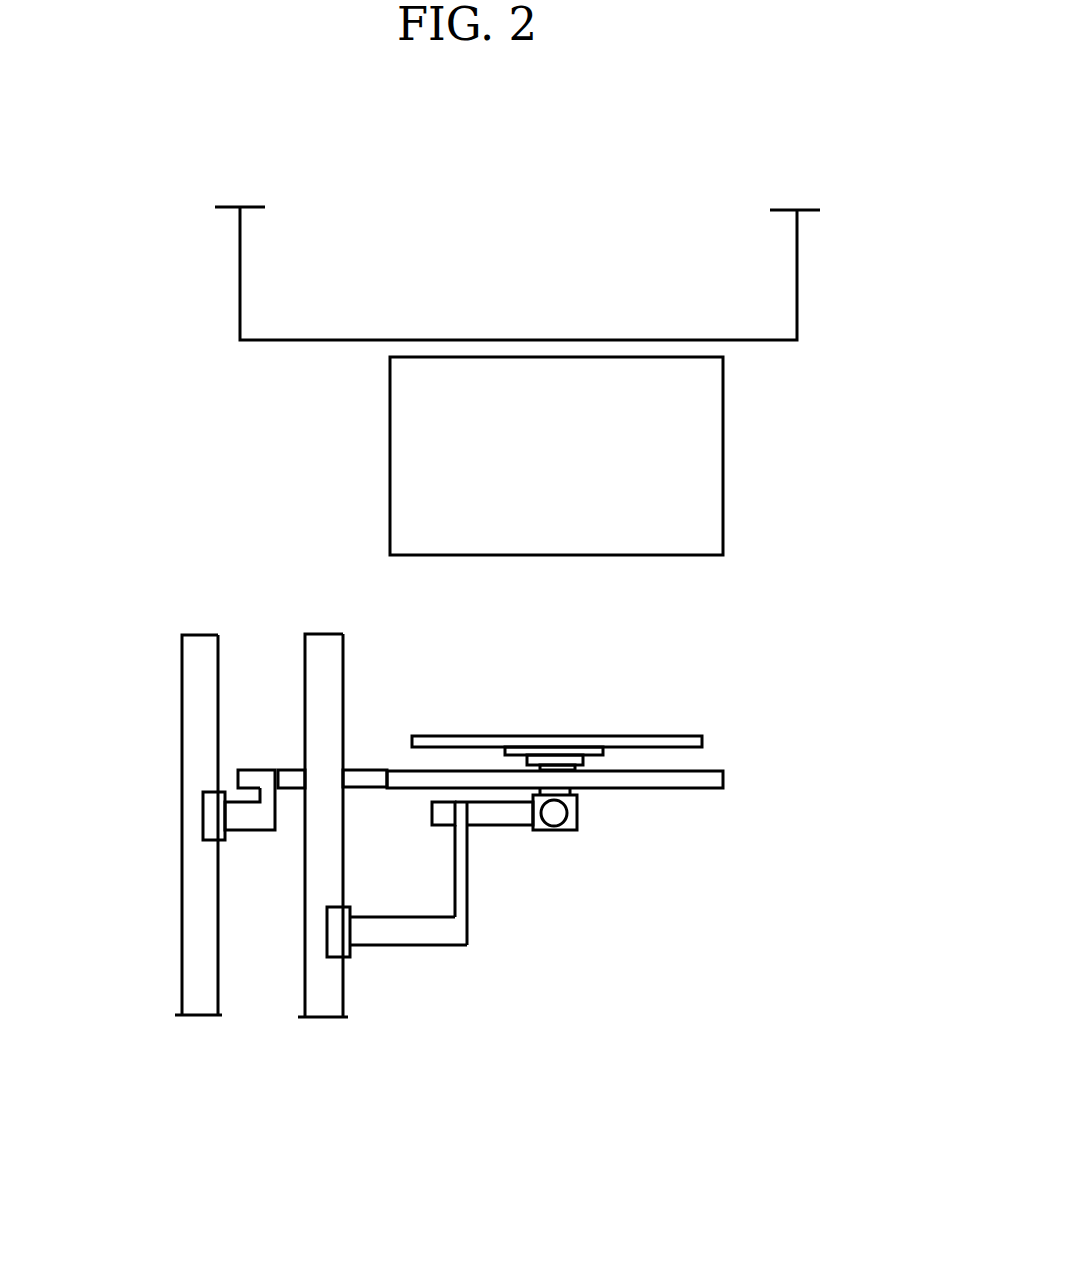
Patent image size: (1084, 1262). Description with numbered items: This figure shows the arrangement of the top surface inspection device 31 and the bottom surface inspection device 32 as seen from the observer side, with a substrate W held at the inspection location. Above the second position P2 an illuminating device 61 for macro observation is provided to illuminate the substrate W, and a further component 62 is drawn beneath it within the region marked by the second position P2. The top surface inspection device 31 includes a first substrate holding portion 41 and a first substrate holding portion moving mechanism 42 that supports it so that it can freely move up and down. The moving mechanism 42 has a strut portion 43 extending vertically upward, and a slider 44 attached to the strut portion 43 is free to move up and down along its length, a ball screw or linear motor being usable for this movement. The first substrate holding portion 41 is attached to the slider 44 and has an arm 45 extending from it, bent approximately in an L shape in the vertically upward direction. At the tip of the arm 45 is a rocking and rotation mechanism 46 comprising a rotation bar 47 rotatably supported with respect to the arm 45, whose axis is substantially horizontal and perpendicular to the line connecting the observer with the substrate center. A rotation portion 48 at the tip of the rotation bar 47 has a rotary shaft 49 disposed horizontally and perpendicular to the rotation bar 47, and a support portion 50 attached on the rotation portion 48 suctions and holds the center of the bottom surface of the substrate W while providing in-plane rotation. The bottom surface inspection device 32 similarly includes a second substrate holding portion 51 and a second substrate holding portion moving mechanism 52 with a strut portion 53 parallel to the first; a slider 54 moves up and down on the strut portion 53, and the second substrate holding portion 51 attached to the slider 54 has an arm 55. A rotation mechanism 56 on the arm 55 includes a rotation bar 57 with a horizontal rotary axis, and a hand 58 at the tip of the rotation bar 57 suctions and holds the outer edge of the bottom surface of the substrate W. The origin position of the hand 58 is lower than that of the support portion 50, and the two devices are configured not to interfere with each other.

The second position P2 is at (850, 378).
The illuminating device 61 is at (797, 272).
The processing head 62 is at (723, 427).
The substrate W is at (703, 742).
The support portion 50 is at (573, 790).
The hand 58 is at (408, 790).
The second substrate holding portion 51 is at (358, 777).
The rotation portion 48 is at (578, 813).
The rotary shaft 49 is at (552, 823).
The rocking and rotation mechanism 46 is at (452, 852).
The rotation bar 47 is at (502, 817).
The first substrate holding portion 41 is at (468, 913).
The arm 45 is at (433, 935).
The slider 44 is at (340, 933).
The top surface inspection device 31 is at (368, 667).
The first substrate holding portion moving mechanism 42 is at (300, 977).
The strut portion 43 is at (318, 902).
The bottom surface inspection device 32 is at (172, 628).
The second substrate holding portion moving mechanism 52 is at (182, 703).
The strut portion 53 is at (195, 750).
The slider 54 is at (212, 818).
The arm 55 is at (250, 820).
The rotation mechanism 56 is at (248, 776).
The rotation bar 57 is at (290, 776).